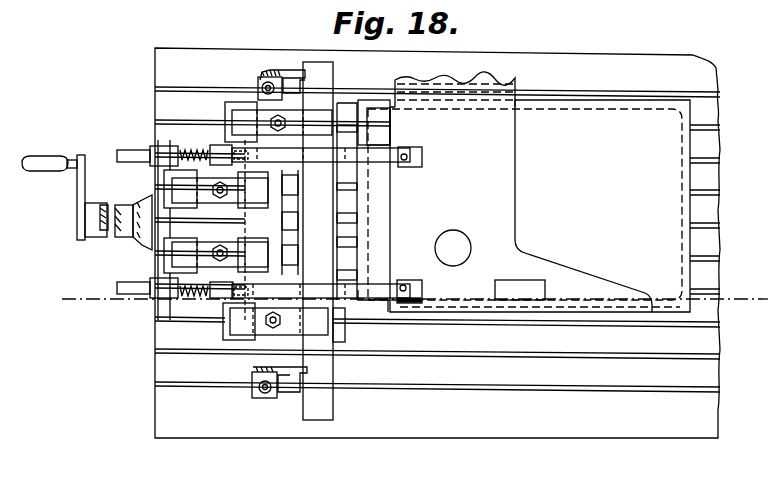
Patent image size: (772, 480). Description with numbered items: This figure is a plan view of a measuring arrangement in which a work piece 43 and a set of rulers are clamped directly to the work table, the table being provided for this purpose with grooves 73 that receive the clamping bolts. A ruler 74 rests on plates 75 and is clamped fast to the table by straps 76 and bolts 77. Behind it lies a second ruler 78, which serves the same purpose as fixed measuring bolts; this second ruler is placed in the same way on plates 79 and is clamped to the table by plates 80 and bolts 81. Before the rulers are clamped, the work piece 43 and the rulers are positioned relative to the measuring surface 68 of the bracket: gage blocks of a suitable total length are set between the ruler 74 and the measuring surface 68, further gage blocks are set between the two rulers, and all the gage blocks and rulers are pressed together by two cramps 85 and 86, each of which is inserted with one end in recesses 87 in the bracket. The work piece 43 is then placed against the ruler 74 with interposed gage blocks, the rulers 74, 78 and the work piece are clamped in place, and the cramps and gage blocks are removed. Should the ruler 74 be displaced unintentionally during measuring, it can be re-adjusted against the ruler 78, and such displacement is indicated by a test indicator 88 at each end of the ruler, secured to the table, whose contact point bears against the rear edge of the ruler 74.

The work piece 43 is at (618, 130).
The measuring surface 68 is at (392, 128).
The grooves 73 is at (707, 158).
The ruler 74 is at (333, 404).
The plates 75 is at (344, 102).
The straps 76 is at (312, 125).
The bolts 77 is at (274, 118).
The second ruler 78 is at (210, 150).
The plates 79 is at (240, 203).
The plates 80 is at (185, 180).
The bolts 81 is at (195, 180).
The cramp 85 is at (378, 290).
The cramp 86 is at (373, 153).
The recesses 87 is at (424, 155).
The test indicator 88 is at (300, 100).